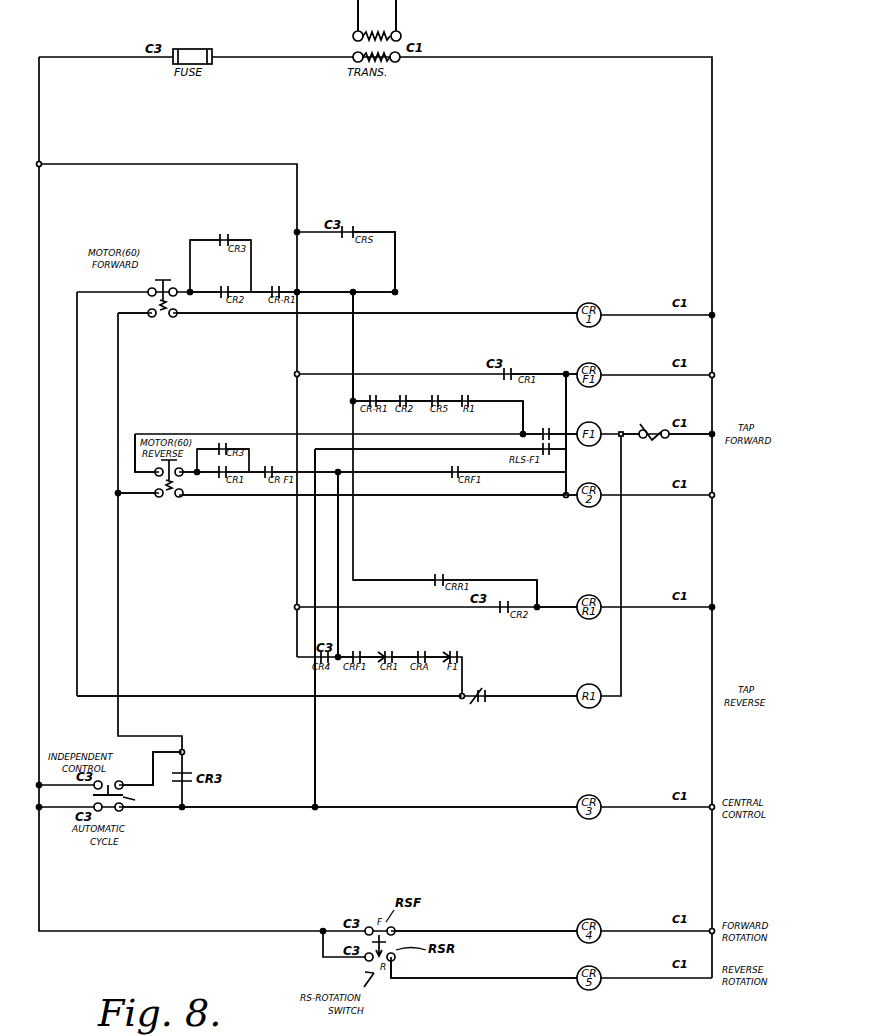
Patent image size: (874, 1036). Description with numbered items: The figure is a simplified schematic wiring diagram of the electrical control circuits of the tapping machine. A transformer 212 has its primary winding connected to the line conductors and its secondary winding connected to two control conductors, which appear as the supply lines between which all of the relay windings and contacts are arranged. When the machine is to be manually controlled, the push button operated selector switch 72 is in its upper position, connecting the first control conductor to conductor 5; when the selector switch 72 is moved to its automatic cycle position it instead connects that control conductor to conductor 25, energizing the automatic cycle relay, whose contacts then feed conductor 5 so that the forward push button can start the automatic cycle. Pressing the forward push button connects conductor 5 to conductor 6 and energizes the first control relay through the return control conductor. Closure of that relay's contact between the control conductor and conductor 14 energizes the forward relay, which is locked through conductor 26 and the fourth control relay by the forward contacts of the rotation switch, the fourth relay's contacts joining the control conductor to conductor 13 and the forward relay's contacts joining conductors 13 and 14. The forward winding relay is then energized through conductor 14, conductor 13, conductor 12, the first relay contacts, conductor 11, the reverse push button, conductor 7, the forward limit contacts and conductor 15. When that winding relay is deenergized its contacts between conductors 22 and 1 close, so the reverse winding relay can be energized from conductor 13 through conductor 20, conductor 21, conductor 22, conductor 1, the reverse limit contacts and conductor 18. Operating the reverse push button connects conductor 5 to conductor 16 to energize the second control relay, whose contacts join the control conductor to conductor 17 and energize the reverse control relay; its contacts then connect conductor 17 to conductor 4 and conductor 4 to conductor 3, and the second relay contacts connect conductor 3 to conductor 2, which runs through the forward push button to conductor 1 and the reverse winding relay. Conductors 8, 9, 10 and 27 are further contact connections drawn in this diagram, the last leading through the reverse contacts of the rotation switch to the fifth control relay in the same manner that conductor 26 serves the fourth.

The transformer 212 is at (352, 39).
The conductor 1 is at (277, 494).
The conductor 2 is at (205, 259).
The conductor 3 is at (225, 266).
The conductor 4 is at (357, 399).
The conductor 5 is at (150, 549).
The conductor 6 is at (375, 314).
The conductor 7 is at (339, 436).
The conductor 8 is at (388, 393).
The conductor 9 is at (419, 393).
The conductor 10 is at (450, 393).
The conductor 11 is at (200, 461).
The conductor 12 is at (247, 452).
The conductor 13 is at (362, 557).
The conductor 14 is at (518, 414).
The conductor 15 is at (566, 423).
The conductor 16 is at (378, 473).
The conductor 17 is at (510, 586).
The conductor 18 is at (531, 689).
The conductor 20 is at (372, 649).
The conductor 21 is at (405, 649).
The conductor 22 is at (437, 649).
The conductor 25 is at (348, 630).
The conductor 26 is at (484, 924).
The conductor 27 is at (484, 964).
The selector push button 72 is at (125, 797).